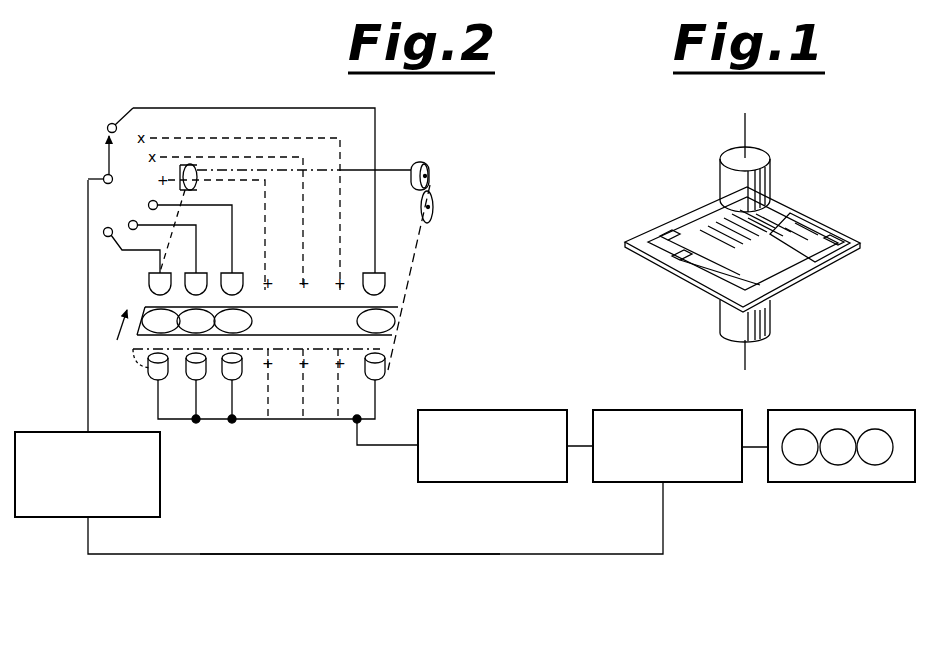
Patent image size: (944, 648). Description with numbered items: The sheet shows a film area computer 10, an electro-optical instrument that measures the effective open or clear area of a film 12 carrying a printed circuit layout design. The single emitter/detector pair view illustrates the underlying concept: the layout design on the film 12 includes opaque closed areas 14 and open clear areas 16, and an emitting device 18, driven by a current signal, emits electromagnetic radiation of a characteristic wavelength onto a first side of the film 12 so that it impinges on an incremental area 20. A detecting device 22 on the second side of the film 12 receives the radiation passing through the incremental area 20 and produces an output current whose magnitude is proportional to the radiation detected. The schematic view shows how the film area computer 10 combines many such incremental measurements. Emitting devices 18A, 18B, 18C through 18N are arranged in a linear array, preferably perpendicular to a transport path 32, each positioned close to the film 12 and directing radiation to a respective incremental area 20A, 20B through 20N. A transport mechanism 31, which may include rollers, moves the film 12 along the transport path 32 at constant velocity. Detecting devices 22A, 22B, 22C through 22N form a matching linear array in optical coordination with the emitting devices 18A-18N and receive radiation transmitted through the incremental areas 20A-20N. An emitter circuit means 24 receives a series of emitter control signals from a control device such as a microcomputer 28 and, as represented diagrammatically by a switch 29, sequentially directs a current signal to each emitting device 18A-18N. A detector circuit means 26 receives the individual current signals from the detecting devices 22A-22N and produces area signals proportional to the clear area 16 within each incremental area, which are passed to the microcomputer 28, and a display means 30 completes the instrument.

In FIG. 2, the film area computer 10 is at (395, 565).
In FIG. 2, the film 12 is at (413, 250).
In FIG. 1, the film 12 is at (813, 273).
In FIG. 1, the closed areas 14 is at (708, 240).
In FIG. 1, the clear areas 16 is at (686, 225).
In FIG. 1, the emitting device 18 is at (769, 170).
In FIG. 2, the emitting device 18A is at (138, 262).
In FIG. 2, the emitting device 18B is at (168, 258).
In FIG. 2, the emitting device 18C is at (196, 248).
In FIG. 2, the emitting device 18N is at (370, 264).
In FIG. 1, the incremental area 20 is at (760, 250).
In FIG. 2, the incremental area 20A is at (154, 308).
In FIG. 2, the incremental area 20B is at (164, 308).
In FIG. 2, the incremental area 20N is at (397, 303).
In FIG. 1, the detecting device 22 is at (720, 327).
In FIG. 2, the detecting device 22A is at (142, 377).
In FIG. 2, the detecting device 22B is at (187, 385).
In FIG. 2, the detecting device 22C is at (224, 385).
In FIG. 2, the detecting device 22N is at (367, 385).
In FIG. 2, the emitter circuit means 24 is at (160, 472).
In FIG. 2, the detector circuit means 26 is at (520, 410).
In FIG. 2, the microcomputer 28 is at (640, 410).
In FIG. 2, the switch 29 is at (104, 175).
In FIG. 2, the display means 30 is at (847, 410).
In FIG. 2, the transport mechanism 31 is at (432, 200).
In FIG. 2, the transport path 32 is at (114, 338).